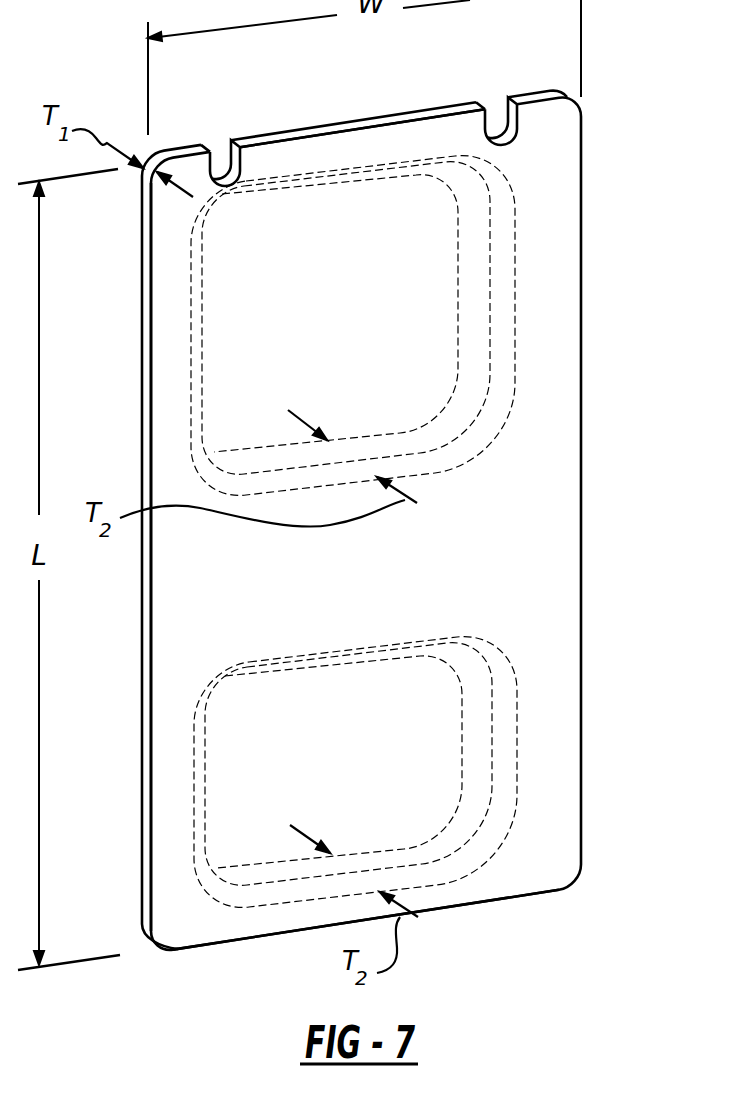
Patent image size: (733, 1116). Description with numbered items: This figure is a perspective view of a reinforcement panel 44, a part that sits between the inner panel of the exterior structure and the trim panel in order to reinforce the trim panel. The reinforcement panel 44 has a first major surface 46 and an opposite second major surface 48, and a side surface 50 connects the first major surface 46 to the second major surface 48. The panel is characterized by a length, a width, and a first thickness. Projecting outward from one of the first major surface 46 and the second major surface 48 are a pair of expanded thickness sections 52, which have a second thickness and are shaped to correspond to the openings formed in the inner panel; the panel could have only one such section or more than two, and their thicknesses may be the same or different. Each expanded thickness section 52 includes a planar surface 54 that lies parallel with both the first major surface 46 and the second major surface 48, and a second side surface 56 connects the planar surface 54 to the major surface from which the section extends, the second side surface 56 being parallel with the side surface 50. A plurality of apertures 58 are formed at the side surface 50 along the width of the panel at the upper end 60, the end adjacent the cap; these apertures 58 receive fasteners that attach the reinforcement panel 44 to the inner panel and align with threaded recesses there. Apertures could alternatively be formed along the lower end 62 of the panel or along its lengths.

The reinforcement panel 44 is at (394, 523).
The first major surface 46 is at (557, 553).
The second major surface 48 is at (141, 593).
The side surface 50 is at (147, 805).
The expanded thickness section 52 is at (430, 302).
The planar surface 54 is at (432, 240).
The second side surface 56 is at (467, 353).
The aperture 58 is at (232, 167).
The upper end 60 is at (539, 100).
The lower end 62 is at (231, 941).